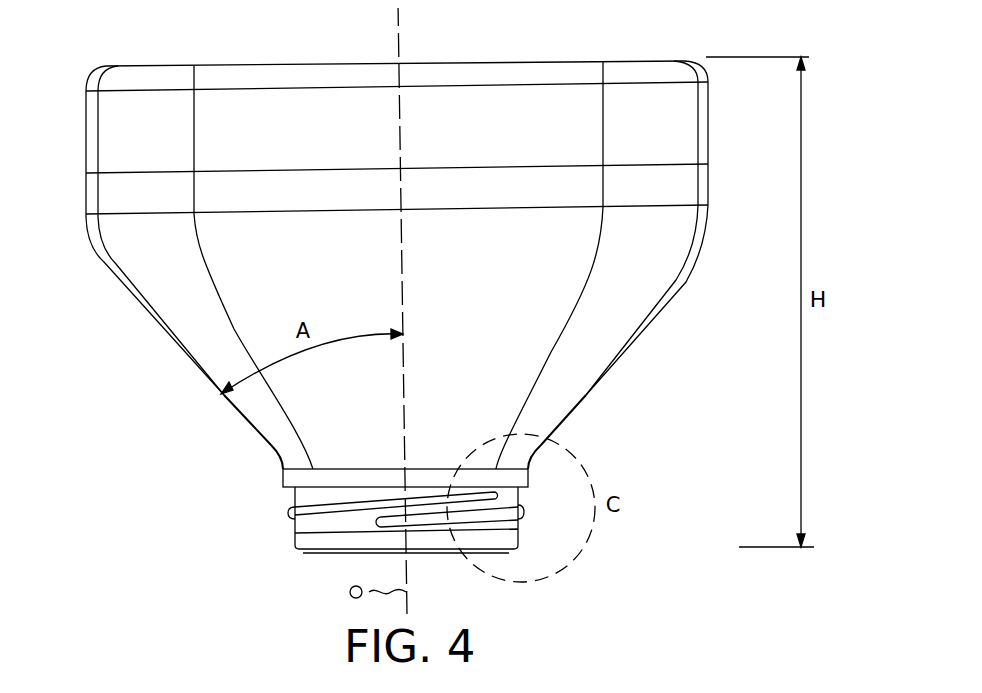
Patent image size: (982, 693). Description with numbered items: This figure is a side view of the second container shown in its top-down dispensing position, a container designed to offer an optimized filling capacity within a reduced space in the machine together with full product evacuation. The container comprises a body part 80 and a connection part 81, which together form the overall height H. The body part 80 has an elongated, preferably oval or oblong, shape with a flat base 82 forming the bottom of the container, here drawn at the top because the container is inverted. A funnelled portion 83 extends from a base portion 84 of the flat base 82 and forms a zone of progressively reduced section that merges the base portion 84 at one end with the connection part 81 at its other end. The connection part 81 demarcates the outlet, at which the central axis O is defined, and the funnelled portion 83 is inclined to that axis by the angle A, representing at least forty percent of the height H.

The body part 80 is at (399, 280).
The flat base 82 is at (665, 57).
The base portion 84 is at (707, 127).
The funnelled portion 83 is at (718, 218).
The connection part 81 is at (728, 459).